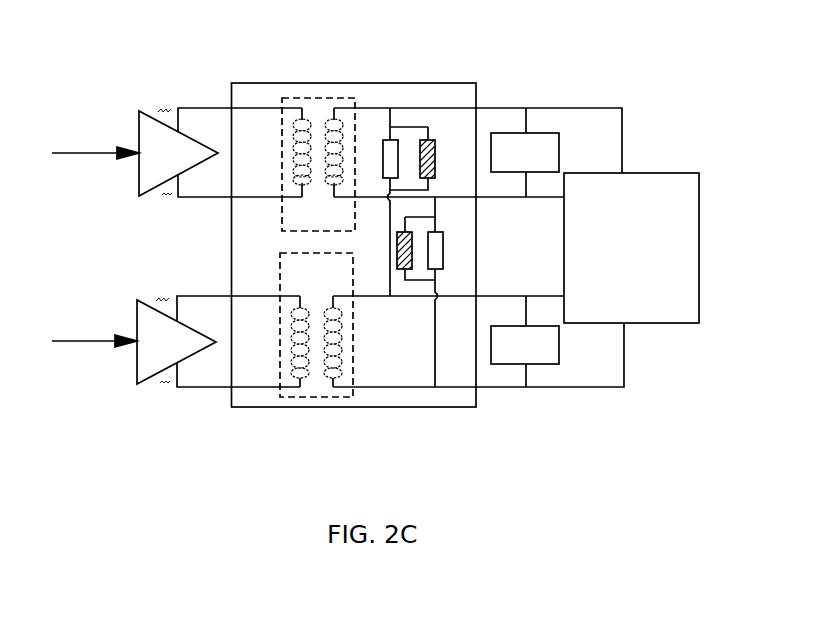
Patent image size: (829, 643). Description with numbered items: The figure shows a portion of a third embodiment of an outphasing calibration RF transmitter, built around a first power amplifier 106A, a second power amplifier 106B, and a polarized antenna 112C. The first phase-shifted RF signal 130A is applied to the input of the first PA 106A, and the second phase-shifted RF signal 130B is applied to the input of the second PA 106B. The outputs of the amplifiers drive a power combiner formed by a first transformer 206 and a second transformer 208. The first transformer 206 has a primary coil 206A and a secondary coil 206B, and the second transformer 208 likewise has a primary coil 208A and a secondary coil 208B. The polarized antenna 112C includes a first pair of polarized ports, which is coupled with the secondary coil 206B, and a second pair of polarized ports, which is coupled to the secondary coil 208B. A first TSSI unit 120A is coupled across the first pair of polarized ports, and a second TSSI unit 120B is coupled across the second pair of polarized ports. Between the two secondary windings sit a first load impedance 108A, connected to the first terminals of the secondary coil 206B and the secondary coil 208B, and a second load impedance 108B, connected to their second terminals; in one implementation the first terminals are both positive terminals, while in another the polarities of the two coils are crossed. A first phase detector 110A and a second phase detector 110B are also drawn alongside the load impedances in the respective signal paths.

The first power amplifier 106A is at (195, 166).
The second power amplifier 106B is at (194, 356).
The first phase-shifted RF signal 130A is at (90, 153).
The second phase-shifted RF signal 130B is at (102, 341).
The first transformer 206 is at (336, 226).
The primary coil 206A is at (302, 108).
The secondary coil 206B is at (334, 108).
The second transformer 208 is at (334, 282).
The primary coil 208A is at (300, 387).
The secondary coil 208B is at (338, 387).
The first load impedance 108A is at (400, 153).
The second load impedance 108B is at (440, 270).
The first phase detector 110A is at (437, 162).
The second phase detector 110B is at (401, 270).
The first transmitter signal strength indicator unit 120A is at (552, 164).
The second transmitter signal strength indicator unit 120B is at (552, 356).
The polarized antenna 112C is at (605, 289).